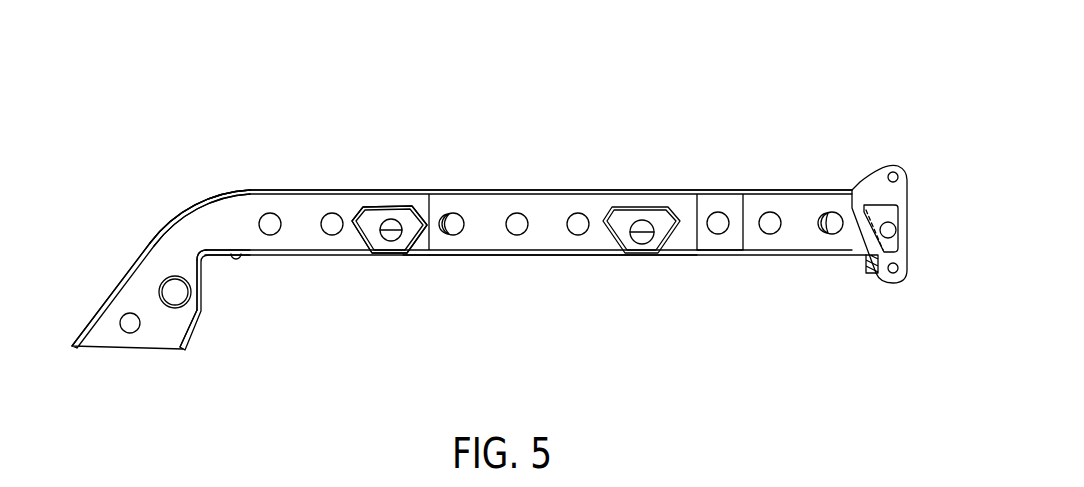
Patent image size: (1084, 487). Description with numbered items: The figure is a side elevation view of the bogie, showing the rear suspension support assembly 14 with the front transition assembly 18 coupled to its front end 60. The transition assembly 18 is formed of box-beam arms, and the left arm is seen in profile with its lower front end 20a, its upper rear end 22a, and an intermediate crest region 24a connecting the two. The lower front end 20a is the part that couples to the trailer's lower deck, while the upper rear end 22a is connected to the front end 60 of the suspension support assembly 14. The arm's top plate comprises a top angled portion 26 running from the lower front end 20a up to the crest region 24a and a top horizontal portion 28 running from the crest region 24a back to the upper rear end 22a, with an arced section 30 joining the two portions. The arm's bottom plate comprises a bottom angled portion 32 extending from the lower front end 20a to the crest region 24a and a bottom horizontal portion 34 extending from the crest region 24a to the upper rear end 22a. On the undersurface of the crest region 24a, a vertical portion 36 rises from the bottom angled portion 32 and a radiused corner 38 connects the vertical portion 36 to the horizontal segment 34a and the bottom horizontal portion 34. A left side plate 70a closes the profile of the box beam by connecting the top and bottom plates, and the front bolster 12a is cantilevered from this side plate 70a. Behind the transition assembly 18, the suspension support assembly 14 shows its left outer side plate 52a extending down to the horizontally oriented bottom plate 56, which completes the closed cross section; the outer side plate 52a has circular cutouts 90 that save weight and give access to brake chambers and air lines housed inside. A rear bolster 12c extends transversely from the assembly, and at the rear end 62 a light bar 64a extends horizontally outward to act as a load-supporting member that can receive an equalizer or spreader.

The rear suspension support assembly 14 is at (703, 86).
The front transition assembly 18 is at (218, 84).
The lower front end 20a is at (69, 369).
The upper rear end 22a is at (420, 274).
The intermediate crest region 24a is at (194, 176).
The top angled portion 26 is at (103, 305).
The top horizontal portion 28 is at (312, 190).
The arced section 30 is at (183, 212).
The bottom angled portion 32 is at (188, 333).
The bottom horizontal portion 34 is at (340, 257).
The horizontal segment 34a is at (236, 254).
The vertical portion 36 is at (200, 295).
The radiused corner 38 is at (210, 262).
The left outer side plate 52a is at (548, 253).
The bottom plate 56 is at (725, 258).
The front end 60 is at (406, 165).
The rear end 62 is at (885, 151).
The light bar 64a is at (895, 247).
The left side plate 70a is at (167, 258).
The bolster 12a is at (408, 218).
The bolster 12c is at (663, 218).
The circular cutouts 90 is at (573, 210).